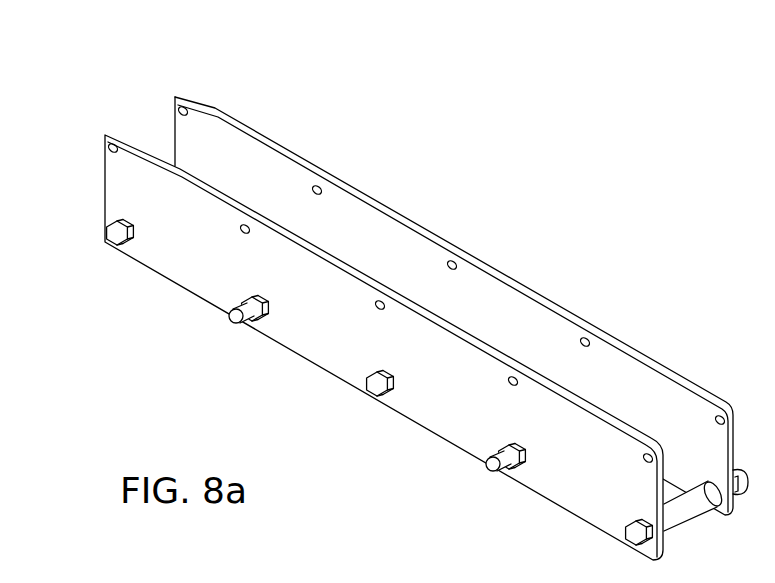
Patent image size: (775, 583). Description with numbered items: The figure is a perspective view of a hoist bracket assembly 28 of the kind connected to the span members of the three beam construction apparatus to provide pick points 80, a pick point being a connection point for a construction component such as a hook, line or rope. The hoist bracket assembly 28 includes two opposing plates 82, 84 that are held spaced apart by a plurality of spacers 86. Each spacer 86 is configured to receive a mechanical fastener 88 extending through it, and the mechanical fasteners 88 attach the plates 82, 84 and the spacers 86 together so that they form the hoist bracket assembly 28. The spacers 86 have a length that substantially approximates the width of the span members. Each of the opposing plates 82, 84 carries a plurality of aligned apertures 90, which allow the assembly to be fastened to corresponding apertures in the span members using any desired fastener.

The hoist bracket assembly 28 is at (449, 172).
The pick point 80 is at (693, 519).
The plate 82 is at (575, 514).
The plate 84 is at (658, 362).
The spacer 86 is at (731, 514).
The mechanical fastener 88 is at (106, 244).
The aperture 90 is at (111, 146).